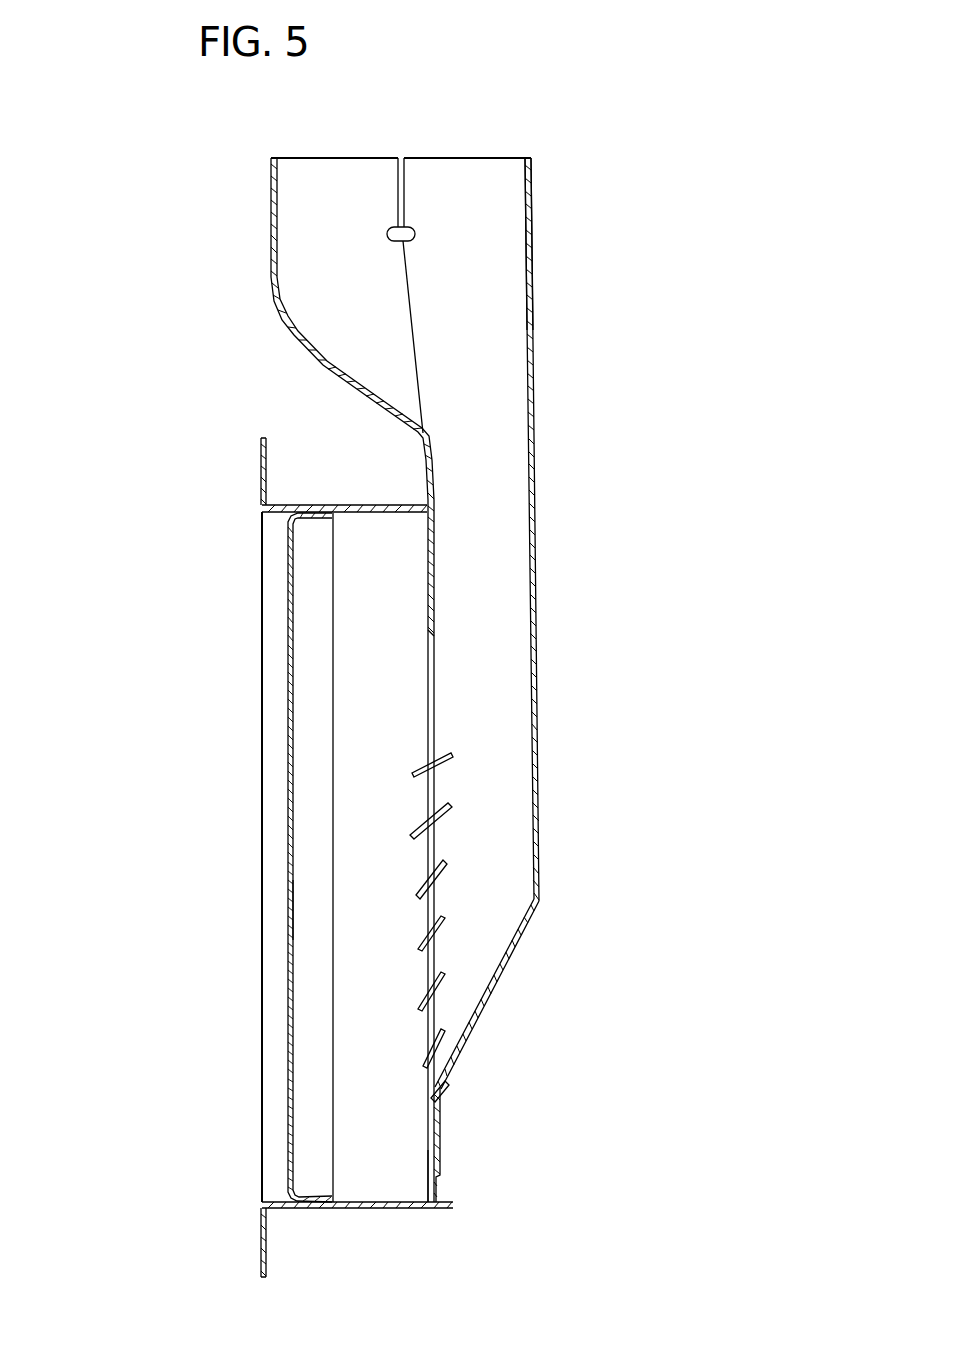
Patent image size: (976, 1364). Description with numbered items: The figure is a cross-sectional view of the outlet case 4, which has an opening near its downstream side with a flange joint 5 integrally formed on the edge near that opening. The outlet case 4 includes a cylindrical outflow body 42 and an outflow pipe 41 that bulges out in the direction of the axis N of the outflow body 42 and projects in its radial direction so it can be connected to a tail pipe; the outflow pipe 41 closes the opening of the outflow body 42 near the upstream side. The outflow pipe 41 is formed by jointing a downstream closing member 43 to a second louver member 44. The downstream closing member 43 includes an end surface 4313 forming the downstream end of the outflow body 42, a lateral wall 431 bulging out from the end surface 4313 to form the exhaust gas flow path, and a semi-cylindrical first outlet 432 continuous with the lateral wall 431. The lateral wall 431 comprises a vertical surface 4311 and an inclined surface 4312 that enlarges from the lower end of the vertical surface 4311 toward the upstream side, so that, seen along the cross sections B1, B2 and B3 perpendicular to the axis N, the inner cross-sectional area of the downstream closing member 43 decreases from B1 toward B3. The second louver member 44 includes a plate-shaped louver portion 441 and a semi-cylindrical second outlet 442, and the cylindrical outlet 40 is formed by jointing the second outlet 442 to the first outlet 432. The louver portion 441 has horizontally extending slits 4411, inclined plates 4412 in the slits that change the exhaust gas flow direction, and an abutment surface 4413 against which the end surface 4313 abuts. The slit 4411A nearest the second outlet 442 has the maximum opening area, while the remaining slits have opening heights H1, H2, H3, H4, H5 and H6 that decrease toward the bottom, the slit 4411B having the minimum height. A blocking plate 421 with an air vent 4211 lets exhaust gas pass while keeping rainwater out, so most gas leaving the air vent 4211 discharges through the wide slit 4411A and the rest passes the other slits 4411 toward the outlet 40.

The outlet case 4 is at (142, 232).
The flange joint 5 is at (262, 446).
The outlet 40 is at (505, 244).
The outflow pipe 41 is at (398, 114).
The outflow body 42 is at (322, 440).
The downstream closing member 43 is at (452, 158).
The second louver member 44 is at (333, 170).
The louver portion 441 is at (435, 565).
The second outlet 442 is at (271, 238).
The blocking plate 421 is at (288, 553).
The air vent 4211 is at (288, 910).
The lateral wall 431 is at (540, 600).
The first outlet 432 is at (531, 190).
The vertical surface 4311 is at (540, 510).
The inclined surface 4312 is at (498, 985).
The end surface 4313 is at (443, 1145).
The slits 4411 is at (436, 796).
The slit near the second outlet 4411A is at (432, 634).
The slit with minimum opening height 4411B is at (447, 1079).
The inclined plates 4412 is at (450, 753).
The abutment surface 4413 is at (427, 1149).
The axis N is at (582, 857).
The opening height H1 is at (388, 808).
The opening height H2 is at (379, 865).
The opening height H3 is at (388, 918).
The opening height H4 is at (379, 975).
The opening height H5 is at (388, 1032).
The opening height H6 is at (379, 1085).
The B1-B1 cross section B1 is at (455, 102).
The B2-B2 cross section B2 is at (488, 102).
The B3-B3 cross section B3 is at (521, 102).